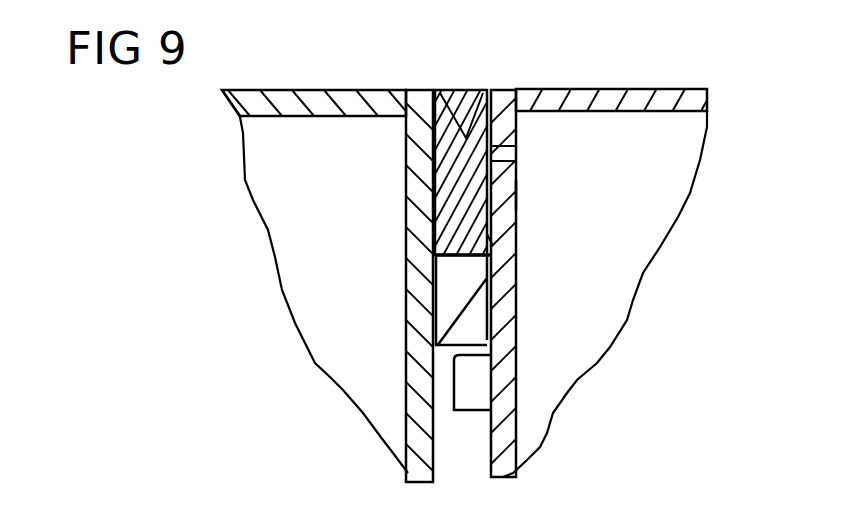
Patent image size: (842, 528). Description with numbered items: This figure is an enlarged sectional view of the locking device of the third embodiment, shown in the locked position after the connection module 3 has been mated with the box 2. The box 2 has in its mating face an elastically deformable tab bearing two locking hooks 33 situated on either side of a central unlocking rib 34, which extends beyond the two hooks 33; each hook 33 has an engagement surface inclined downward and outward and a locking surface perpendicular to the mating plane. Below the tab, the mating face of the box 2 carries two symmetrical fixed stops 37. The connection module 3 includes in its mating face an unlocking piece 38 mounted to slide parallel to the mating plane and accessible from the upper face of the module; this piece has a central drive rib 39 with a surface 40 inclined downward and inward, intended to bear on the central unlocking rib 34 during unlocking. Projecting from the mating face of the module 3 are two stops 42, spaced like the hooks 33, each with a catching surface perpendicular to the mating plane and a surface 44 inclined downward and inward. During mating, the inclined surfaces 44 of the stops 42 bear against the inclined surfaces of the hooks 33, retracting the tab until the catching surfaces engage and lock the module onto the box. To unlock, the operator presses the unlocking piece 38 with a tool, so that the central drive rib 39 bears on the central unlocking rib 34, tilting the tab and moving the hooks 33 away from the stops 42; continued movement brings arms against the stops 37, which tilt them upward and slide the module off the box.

The box 2 is at (562, 82).
The connection module 3 is at (356, 86).
The locking hook 33 is at (517, 196).
The central unlocking rib 34 is at (493, 240).
The fixed stop 37 is at (480, 397).
The unlocking piece 38 is at (452, 90).
The central drive rib 39 is at (455, 205).
The inclined surface 40 is at (436, 254).
The stop 42 is at (467, 280).
The inclined surface 44 is at (493, 330).